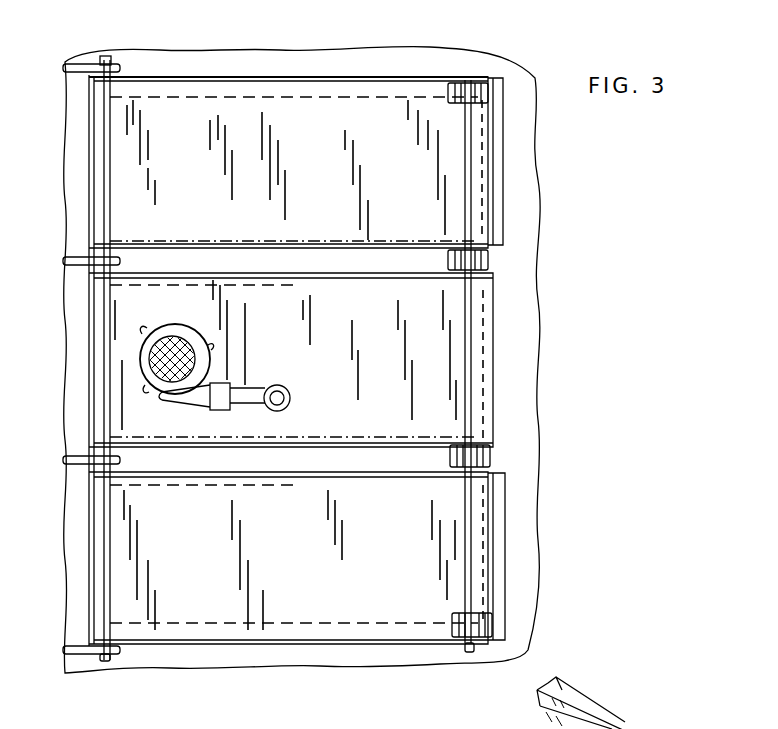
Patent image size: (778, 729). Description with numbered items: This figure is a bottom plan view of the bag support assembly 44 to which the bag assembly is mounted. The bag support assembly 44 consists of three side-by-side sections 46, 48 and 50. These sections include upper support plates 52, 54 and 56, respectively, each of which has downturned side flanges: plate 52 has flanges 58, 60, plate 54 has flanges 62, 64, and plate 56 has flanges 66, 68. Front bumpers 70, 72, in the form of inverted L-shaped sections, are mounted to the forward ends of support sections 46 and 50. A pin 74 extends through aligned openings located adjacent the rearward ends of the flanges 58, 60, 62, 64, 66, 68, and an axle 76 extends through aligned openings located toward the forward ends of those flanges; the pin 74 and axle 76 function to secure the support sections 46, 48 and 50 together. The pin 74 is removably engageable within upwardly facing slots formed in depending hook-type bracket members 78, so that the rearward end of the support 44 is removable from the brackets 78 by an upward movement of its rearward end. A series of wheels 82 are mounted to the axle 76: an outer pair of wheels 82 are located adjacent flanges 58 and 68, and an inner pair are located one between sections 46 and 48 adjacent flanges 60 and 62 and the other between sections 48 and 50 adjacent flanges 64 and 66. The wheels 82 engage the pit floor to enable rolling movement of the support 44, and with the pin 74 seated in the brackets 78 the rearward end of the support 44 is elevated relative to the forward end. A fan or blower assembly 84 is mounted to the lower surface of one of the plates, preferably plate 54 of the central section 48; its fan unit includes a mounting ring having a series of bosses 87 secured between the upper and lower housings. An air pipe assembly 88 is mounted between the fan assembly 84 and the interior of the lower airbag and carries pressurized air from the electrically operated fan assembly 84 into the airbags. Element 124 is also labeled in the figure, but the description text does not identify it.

The bag support assembly 44 is at (293, 72).
The support section 46 is at (512, 228).
The support section 48 is at (505, 388).
The support section 50 is at (515, 556).
The upper support plate 52 is at (198, 199).
The upper support plate 54 is at (343, 366).
The upper support plate 56 is at (293, 581).
The side flange 58 is at (348, 82).
The side flange 60 is at (365, 247).
The side flange 62 is at (352, 281).
The side flange 64 is at (390, 438).
The side flange 66 is at (356, 476).
The side flange 68 is at (363, 621).
The front bumper 70 is at (504, 172).
The front bumper 72 is at (508, 586).
The pin 74 is at (120, 60).
The axle 76 is at (470, 351).
The hook-type bracket member 78 is at (80, 76).
The wheels 82 is at (490, 90).
The fan or blower assembly 84 is at (222, 338).
The bosses 87 is at (150, 330).
The air pipe assembly 88 is at (248, 415).
The support bracket 124 is at (636, 728).